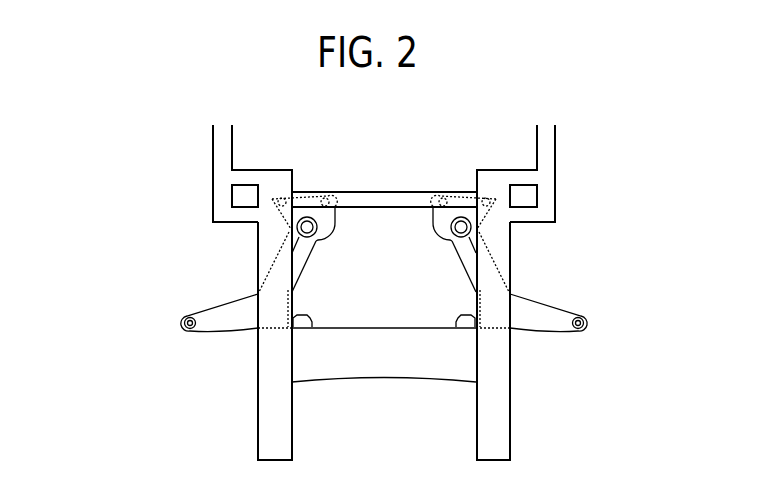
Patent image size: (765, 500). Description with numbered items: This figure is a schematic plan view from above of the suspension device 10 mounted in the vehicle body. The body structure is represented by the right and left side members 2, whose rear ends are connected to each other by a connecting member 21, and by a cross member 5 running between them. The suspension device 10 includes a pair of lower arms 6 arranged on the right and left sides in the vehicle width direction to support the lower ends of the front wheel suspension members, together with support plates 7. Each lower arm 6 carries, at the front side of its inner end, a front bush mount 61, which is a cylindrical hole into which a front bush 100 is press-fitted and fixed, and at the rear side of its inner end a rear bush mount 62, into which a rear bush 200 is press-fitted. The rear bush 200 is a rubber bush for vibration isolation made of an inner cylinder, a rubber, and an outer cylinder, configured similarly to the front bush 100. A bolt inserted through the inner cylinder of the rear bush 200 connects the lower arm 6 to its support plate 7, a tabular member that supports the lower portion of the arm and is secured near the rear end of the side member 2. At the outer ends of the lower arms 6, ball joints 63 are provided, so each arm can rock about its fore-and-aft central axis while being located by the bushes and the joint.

The suspension device 10 is at (113, 203).
The side members 2 is at (258, 444).
The connecting member 21 is at (420, 197).
The cross member 5 is at (383, 340).
The support plate 7 is at (443, 222).
The rear bush mount 62 is at (297, 230).
The rear bush 200 is at (326, 218).
The front bush mount 61 is at (312, 327).
The front bush 100 is at (310, 322).
The lower arms 6 is at (235, 301).
The ball joints 63 is at (183, 322).